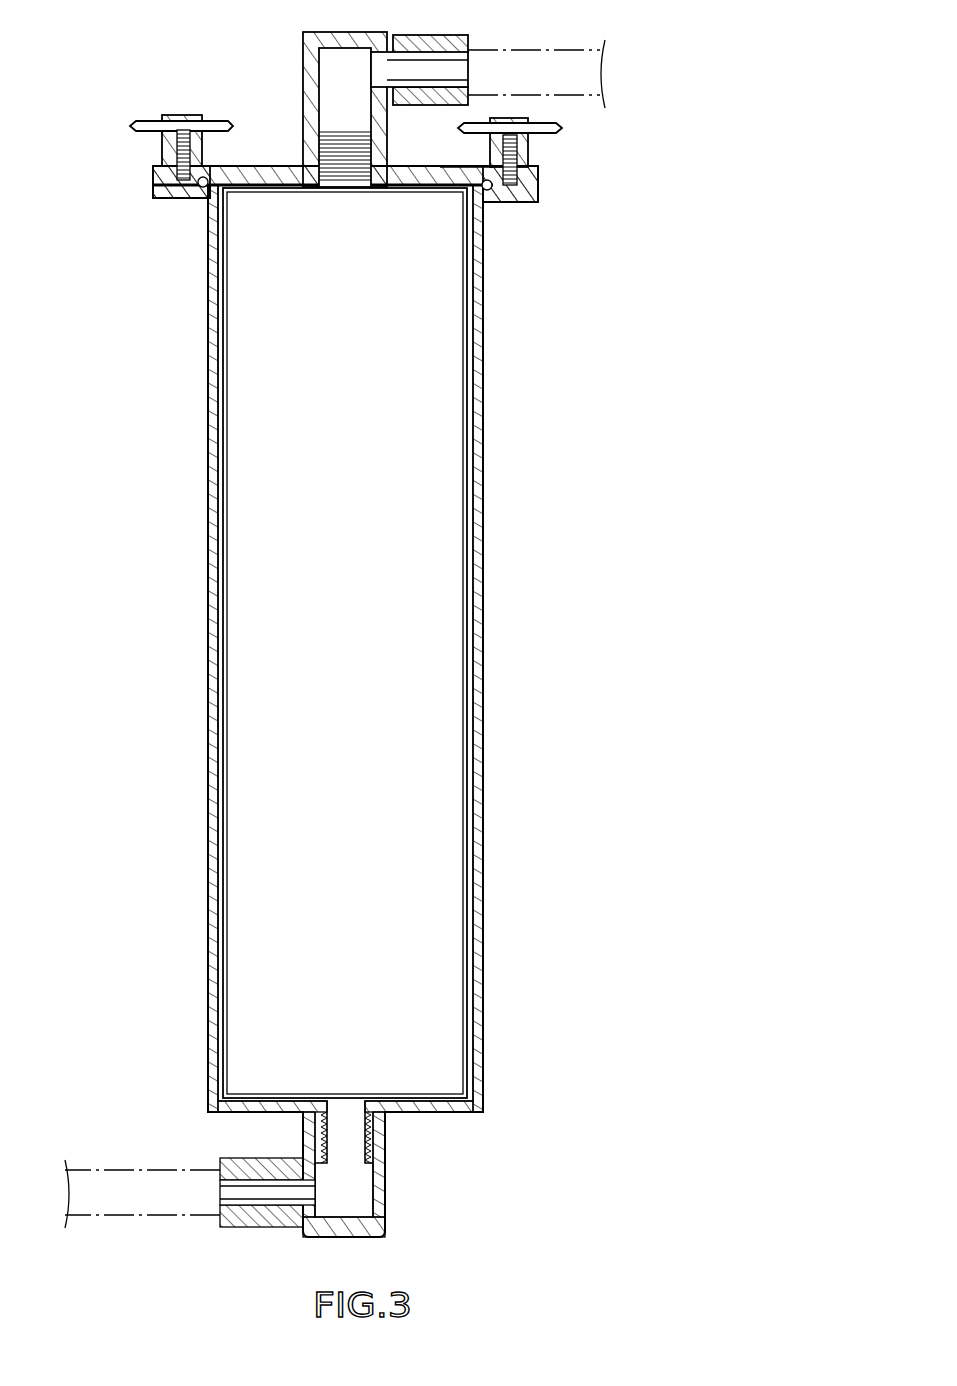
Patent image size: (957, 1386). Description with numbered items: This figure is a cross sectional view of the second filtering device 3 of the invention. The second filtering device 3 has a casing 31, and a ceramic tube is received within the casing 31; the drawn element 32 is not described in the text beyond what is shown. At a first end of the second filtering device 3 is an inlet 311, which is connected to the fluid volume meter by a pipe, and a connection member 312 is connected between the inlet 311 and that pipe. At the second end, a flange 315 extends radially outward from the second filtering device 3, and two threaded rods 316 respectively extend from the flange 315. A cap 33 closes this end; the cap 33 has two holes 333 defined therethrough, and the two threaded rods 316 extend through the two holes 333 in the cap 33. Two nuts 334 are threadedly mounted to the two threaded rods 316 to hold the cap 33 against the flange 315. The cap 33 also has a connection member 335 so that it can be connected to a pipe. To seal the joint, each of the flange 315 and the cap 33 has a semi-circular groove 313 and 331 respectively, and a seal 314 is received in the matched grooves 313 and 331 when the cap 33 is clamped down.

The second filtering device 3 is at (148, 590).
The casing 31 is at (483, 662).
The filter element 32 is at (442, 570).
The inlet 311 is at (357, 1143).
The connection member 312 is at (353, 1227).
The semi-circular groove 313 is at (202, 188).
The seal 314 is at (490, 192).
The flange 315 is at (527, 197).
The threaded rods 316 is at (527, 153).
The cap 33 is at (277, 163).
The semi-circular groove 331 is at (483, 182).
The holes 333 is at (165, 172).
The nuts 334 is at (177, 115).
The connection member 335 is at (338, 37).